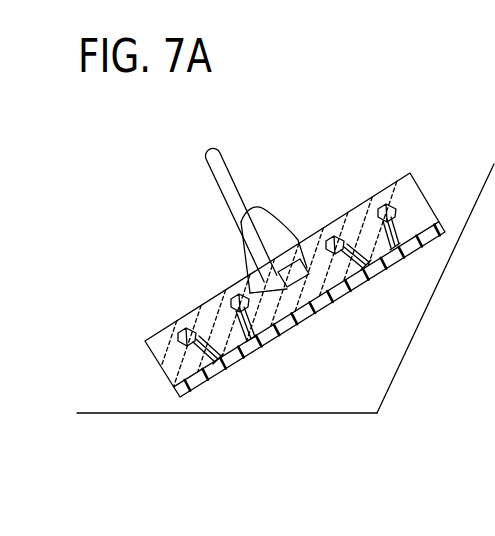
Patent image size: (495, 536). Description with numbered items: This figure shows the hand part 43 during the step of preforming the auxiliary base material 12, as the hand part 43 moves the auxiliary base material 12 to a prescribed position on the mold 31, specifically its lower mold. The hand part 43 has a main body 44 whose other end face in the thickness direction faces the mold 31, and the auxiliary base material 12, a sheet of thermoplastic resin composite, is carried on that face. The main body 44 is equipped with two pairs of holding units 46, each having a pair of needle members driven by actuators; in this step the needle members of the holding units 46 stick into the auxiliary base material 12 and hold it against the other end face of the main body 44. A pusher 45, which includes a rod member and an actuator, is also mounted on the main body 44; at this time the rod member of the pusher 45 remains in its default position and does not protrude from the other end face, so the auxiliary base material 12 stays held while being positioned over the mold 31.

The auxiliary base material 12 is at (447, 215).
The mold 31 is at (138, 413).
The hand part 43 is at (342, 184).
The main body 44 is at (172, 386).
The pusher 45 is at (223, 190).
The holding unit 46 is at (200, 365).